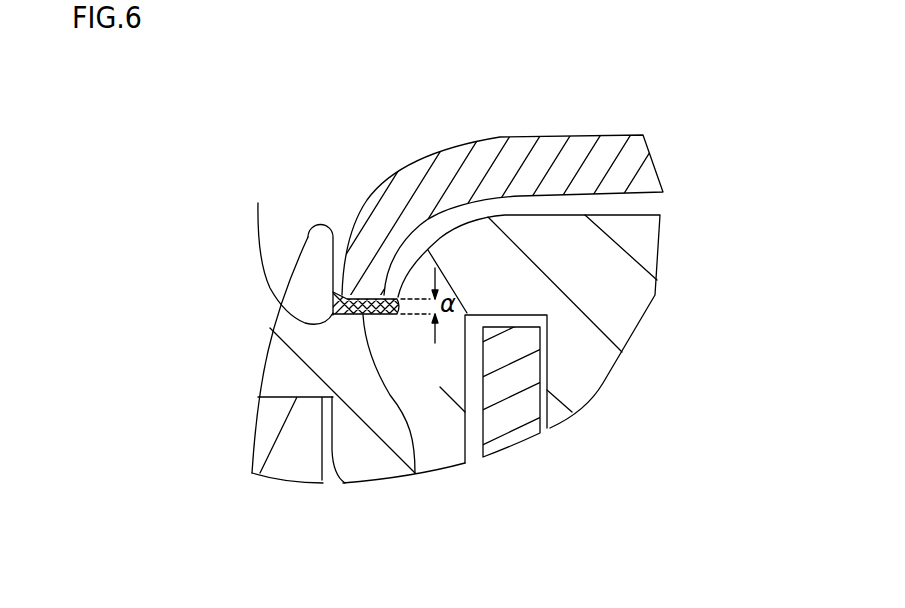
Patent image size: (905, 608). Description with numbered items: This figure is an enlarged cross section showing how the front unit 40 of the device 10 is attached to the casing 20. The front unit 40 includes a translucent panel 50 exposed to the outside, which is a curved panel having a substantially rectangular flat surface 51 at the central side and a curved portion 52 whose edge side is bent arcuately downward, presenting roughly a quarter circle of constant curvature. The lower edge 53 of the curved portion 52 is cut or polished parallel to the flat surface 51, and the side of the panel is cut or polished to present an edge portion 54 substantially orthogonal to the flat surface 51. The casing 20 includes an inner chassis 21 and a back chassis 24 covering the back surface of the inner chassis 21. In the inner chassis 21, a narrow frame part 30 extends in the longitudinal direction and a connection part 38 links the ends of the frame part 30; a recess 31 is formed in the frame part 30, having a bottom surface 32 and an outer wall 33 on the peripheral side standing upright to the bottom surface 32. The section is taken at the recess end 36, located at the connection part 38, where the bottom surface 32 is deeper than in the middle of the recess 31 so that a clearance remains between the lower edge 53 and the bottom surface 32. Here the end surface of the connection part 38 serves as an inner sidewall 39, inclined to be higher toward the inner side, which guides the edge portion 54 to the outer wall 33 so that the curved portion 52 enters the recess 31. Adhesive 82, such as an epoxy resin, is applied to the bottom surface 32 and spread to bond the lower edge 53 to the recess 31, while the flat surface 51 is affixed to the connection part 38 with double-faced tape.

The assembly 10 is at (648, 110).
The casing 20 is at (336, 442).
The inner chassis 21 is at (358, 452).
The back chassis 24 is at (307, 455).
The frame part 30 is at (278, 347).
The recess 31 is at (252, 228).
The bottom surface 32 is at (290, 252).
The outer wall 33 is at (333, 263).
The recess end 36 is at (252, 228).
The connection part 38 is at (557, 217).
The inner sidewall 39 is at (447, 205).
The front unit 40 is at (509, 220).
The translucent panel 50 is at (633, 167).
The flat surface 51 is at (555, 153).
The curved portion 52 is at (390, 210).
The lower edge 53 is at (372, 296).
The edge portion 54 is at (366, 296).
The adhesive 82 is at (415, 473).